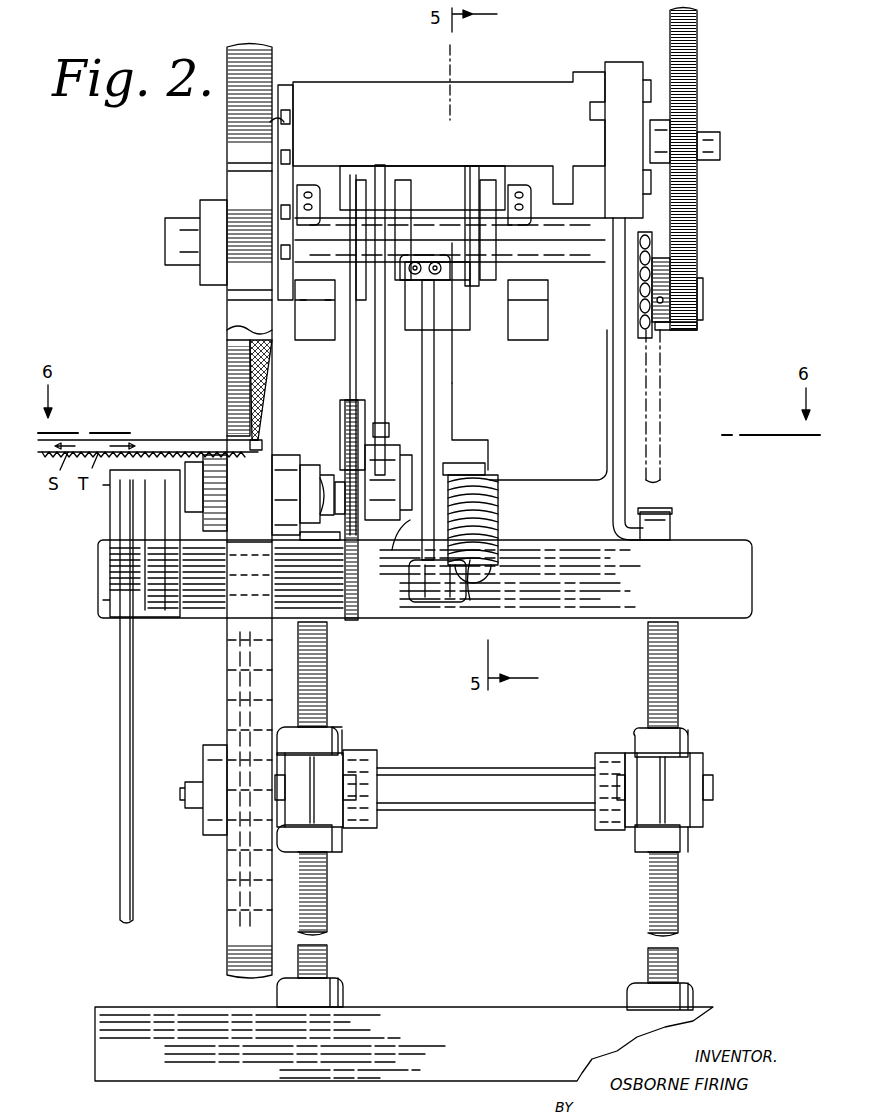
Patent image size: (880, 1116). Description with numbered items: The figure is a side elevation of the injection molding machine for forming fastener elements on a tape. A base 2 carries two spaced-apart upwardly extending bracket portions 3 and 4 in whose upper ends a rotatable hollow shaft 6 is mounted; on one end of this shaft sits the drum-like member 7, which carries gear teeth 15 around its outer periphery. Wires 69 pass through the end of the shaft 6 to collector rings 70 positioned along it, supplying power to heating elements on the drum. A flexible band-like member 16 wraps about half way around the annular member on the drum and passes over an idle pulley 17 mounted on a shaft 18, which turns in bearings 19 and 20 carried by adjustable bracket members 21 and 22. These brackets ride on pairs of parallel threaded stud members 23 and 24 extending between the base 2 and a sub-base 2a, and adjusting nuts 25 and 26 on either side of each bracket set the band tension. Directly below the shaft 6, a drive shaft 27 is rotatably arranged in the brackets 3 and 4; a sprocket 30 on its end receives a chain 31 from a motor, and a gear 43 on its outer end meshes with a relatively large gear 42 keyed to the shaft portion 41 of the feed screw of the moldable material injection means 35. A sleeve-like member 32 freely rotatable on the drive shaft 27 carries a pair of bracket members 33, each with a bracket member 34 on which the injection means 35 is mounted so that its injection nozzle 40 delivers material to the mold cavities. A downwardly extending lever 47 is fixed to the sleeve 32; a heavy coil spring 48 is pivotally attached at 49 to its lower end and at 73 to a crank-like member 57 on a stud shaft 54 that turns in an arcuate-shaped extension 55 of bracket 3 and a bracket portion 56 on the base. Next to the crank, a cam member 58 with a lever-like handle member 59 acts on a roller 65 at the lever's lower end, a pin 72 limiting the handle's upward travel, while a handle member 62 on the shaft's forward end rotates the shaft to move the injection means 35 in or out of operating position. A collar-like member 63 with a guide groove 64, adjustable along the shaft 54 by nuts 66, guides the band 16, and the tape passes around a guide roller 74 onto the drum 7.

The base 2 is at (738, 579).
The sub-base 2a is at (205, 1075).
The bracket portion 3 is at (350, 350).
The bracket portion 4 is at (620, 497).
The hollow shaft 6 is at (556, 240).
The drum-like member 7 is at (218, 358).
The gear teeth 15 is at (227, 394).
The flexible band-like member 16 is at (240, 600).
The idle pulley 17 is at (220, 715).
The shaft 18 is at (468, 768).
The bearing 19 is at (356, 752).
The bearing 20 is at (702, 754).
The bracket member 21 is at (332, 810).
The bracket member 22 is at (673, 794).
The threaded stud members 23 is at (328, 906).
The threaded stud members 24 is at (680, 903).
The adjusting nut 25 is at (316, 740).
The adjusting nut 26 is at (642, 734).
The drive shaft 27 is at (702, 314).
The sprocket 30 is at (652, 245).
The chain 31 is at (658, 392).
The sleeve-like member 32 is at (478, 307).
The bracket members 33 is at (305, 334).
The bracket member 34 is at (295, 245).
The moldable material injection means 35 is at (488, 84).
The injection nozzle 40 is at (283, 118).
The shaft portion 41 is at (719, 149).
The gear 42 is at (698, 44).
The gear 43 is at (698, 287).
The lever 47 is at (434, 368).
The coil spring 48 is at (486, 534).
The pivotal attachment / roller 49 is at (475, 464).
The stud shaft 54 is at (310, 468).
The arcuate-shaped extension 55 is at (351, 562).
The bracket portion 56 is at (148, 522).
The crank-like member 57 is at (422, 562).
The cam member 58 is at (388, 446).
The lever-like handle member 59 is at (380, 384).
The manually-operated lever-like handle member 62 is at (122, 662).
The collar-like member 63 is at (288, 455).
The guide groove 64 is at (234, 480).
The roller 65 is at (312, 533).
The nuts 66 is at (204, 552).
The wires 69 is at (163, 235).
The collector rings 70 is at (485, 208).
The pin 72 is at (374, 414).
The pivotal attachment 73 is at (462, 602).
The guide roller 74 is at (250, 440).